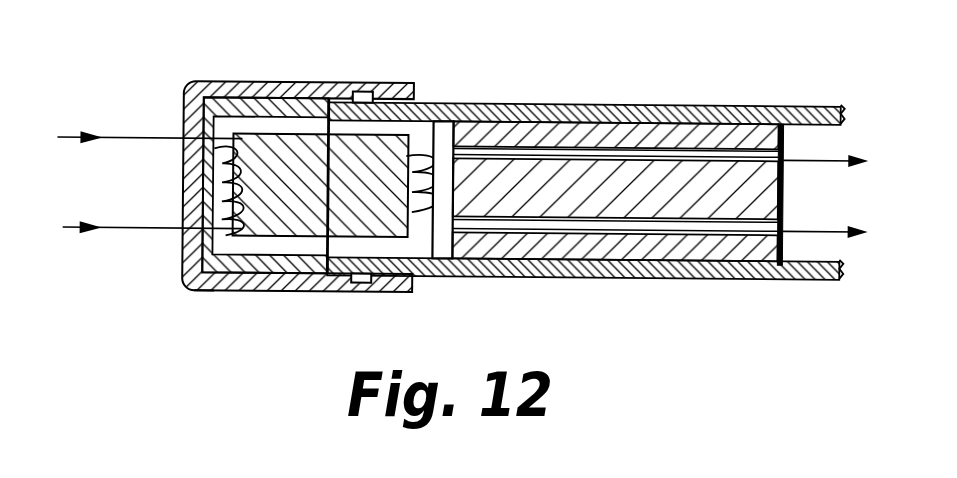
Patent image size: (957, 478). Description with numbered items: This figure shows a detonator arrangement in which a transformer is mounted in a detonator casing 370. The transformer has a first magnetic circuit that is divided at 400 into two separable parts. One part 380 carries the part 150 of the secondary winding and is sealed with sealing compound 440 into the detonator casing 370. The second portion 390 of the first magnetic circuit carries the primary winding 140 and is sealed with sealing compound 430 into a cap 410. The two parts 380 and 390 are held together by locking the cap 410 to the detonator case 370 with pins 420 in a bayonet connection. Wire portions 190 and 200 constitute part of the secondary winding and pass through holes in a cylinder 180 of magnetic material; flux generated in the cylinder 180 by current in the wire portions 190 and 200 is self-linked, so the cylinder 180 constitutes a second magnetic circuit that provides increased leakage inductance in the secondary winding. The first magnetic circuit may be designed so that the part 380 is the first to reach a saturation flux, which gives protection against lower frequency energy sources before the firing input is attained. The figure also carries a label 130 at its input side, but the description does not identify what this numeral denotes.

The incoming light beams 130 is at (100, 229).
The primary winding 140 is at (200, 250).
The part of the secondary winding 150 is at (418, 142).
The cylinder of magnetic material 180 is at (703, 137).
The wire portion 190 is at (785, 150).
The wire portion 200 is at (788, 242).
The detonator casing 370 is at (557, 108).
The part of the first magnetic circuit 380 is at (420, 240).
The second portion of the first magnetic circuit 390 is at (220, 292).
The division of the first magnetic circuit 400 is at (318, 246).
The cap 410 is at (201, 83).
The pins 420 is at (362, 92).
The sealing compound 430 is at (252, 99).
The sealing compound 440 is at (343, 200).